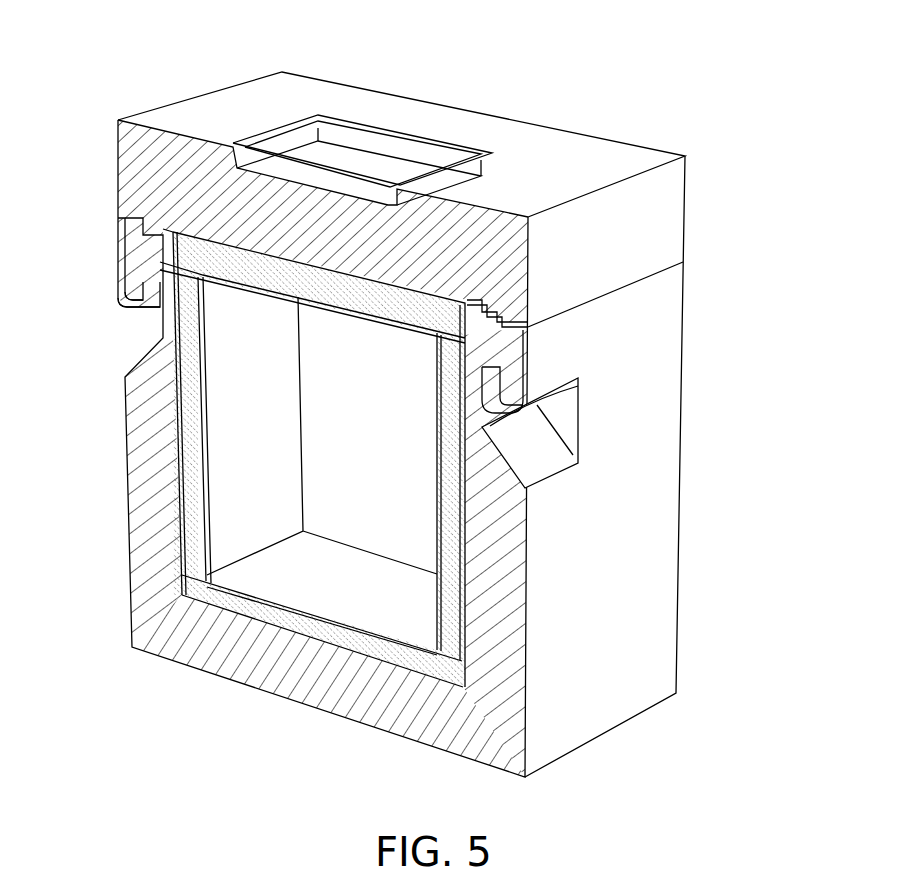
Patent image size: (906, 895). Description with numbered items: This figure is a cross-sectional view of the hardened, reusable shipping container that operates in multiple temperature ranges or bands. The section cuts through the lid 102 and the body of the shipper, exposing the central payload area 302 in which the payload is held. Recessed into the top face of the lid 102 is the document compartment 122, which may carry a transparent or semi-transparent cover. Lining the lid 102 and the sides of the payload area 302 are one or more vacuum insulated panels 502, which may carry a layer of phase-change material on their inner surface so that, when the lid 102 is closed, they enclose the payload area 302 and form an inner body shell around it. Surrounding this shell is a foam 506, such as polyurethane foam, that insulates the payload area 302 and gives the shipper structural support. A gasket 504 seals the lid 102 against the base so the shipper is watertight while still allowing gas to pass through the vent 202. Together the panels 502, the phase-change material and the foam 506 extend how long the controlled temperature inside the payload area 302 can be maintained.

The lid 102 is at (369, 396).
The document compartment 122 is at (328, 150).
The vent 202 is at (528, 325).
The payload area 302 is at (227, 527).
The vacuum insulated panel 502 is at (157, 312).
The gasket 504 is at (500, 302).
The foam 506 is at (160, 500).